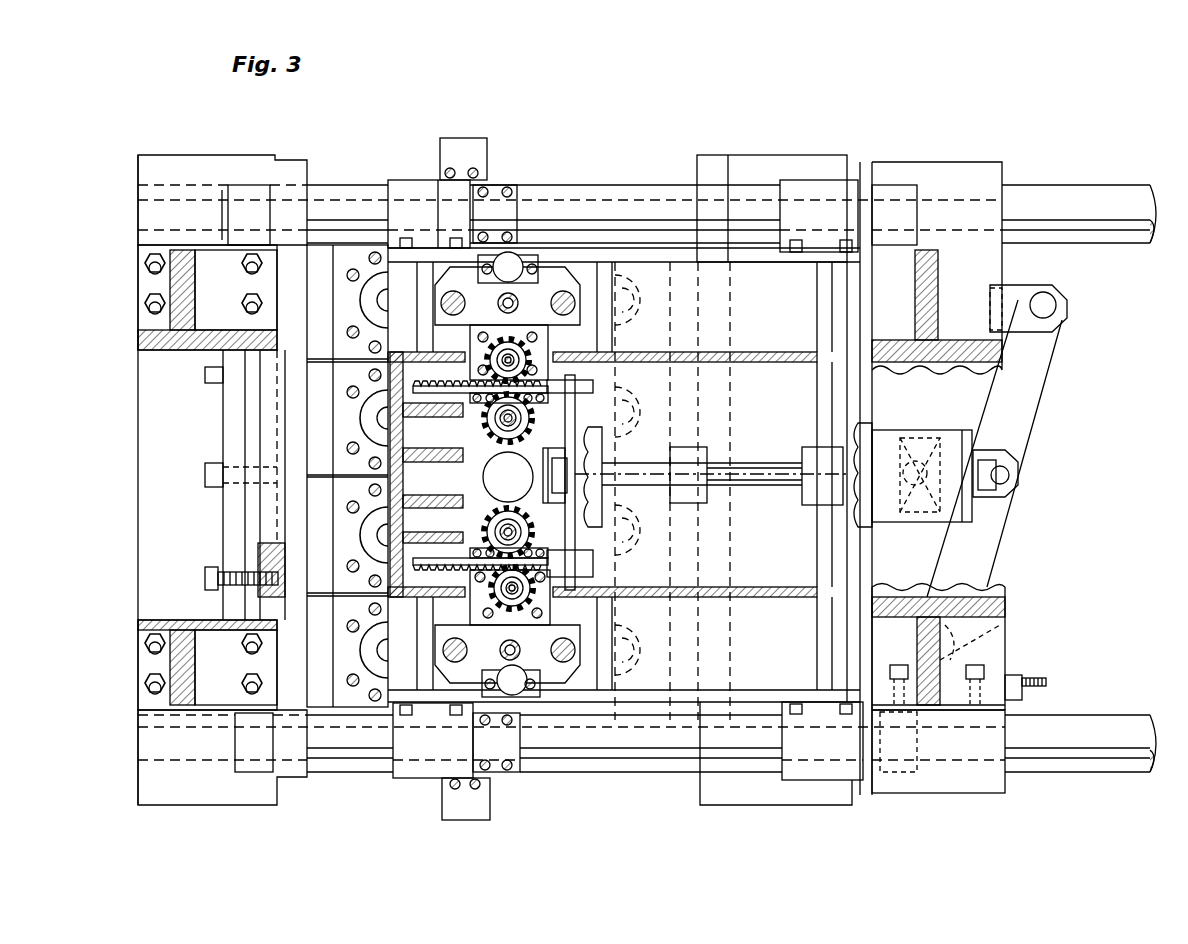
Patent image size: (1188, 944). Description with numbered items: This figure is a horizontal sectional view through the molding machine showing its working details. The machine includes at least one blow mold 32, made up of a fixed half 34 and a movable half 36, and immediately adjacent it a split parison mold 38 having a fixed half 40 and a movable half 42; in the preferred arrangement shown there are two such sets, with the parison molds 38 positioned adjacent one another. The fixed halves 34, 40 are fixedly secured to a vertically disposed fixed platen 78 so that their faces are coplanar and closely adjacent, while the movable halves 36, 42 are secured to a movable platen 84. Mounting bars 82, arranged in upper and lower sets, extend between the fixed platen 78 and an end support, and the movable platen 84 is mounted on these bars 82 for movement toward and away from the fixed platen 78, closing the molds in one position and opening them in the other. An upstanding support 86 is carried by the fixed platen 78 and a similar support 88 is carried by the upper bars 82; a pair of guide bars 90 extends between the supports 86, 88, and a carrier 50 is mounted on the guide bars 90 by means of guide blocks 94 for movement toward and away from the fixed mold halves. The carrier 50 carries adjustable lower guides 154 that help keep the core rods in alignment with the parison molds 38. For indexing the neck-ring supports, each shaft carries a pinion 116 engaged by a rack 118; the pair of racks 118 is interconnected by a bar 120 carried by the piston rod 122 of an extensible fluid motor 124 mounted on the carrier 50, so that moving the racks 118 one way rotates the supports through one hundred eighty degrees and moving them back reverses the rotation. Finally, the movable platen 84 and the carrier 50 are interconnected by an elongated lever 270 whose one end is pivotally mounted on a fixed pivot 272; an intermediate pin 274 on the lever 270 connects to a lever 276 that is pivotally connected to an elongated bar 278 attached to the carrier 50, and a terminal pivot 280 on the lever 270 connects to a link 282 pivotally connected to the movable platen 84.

The blow mold 32 is at (345, 298).
The fixed half 34 is at (347, 256).
The movable half 36 is at (643, 265).
The parison mold 38 is at (345, 455).
The fixed half 40 is at (345, 421).
The movable half 42 is at (640, 411).
The carrier 50 is at (742, 128).
The fixed platen 78 is at (196, 165).
The mounting bars 82 is at (1085, 196).
The movable platen 84 is at (812, 165).
The upstanding support 86 is at (247, 438).
The support 88 is at (980, 780).
The guide bars 90 is at (527, 205).
The guide blocks 94 is at (410, 190).
The pinion 116 is at (509, 345).
The rack 118 is at (450, 392).
The bar 120 is at (600, 398).
The piston rod 122 is at (645, 462).
The extensible fluid motor 124 is at (712, 476).
The lower guides 154 is at (461, 474).
The elongated lever 270 is at (1040, 366).
The fixed pivot 272 is at (1008, 636).
The intermediate pin 274 is at (1000, 476).
The lever 276 is at (1010, 490).
The elongated bar 278 is at (880, 527).
The terminal pivot 280 is at (1046, 305).
The link 282 is at (1020, 292).